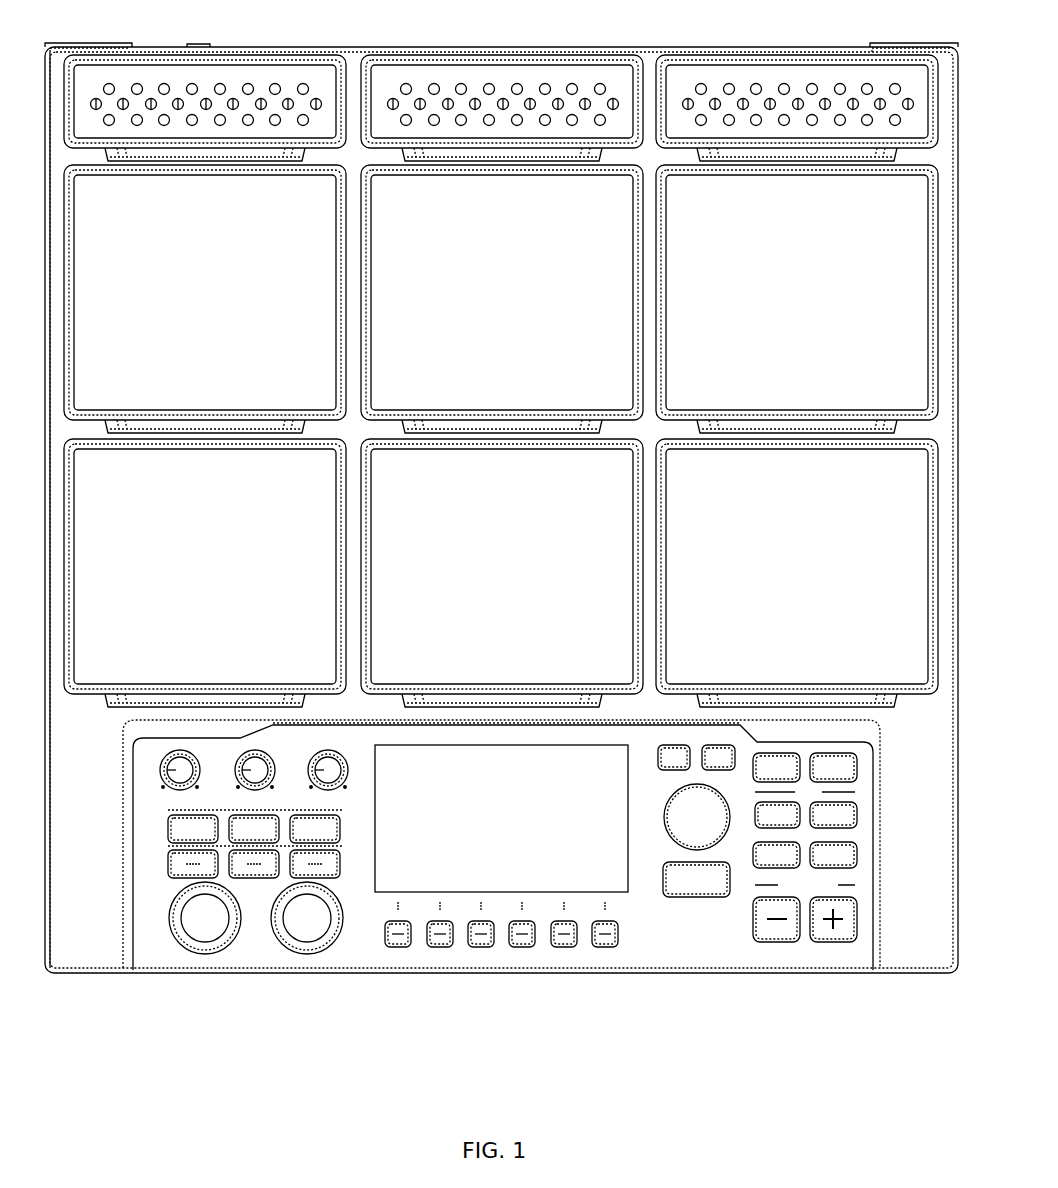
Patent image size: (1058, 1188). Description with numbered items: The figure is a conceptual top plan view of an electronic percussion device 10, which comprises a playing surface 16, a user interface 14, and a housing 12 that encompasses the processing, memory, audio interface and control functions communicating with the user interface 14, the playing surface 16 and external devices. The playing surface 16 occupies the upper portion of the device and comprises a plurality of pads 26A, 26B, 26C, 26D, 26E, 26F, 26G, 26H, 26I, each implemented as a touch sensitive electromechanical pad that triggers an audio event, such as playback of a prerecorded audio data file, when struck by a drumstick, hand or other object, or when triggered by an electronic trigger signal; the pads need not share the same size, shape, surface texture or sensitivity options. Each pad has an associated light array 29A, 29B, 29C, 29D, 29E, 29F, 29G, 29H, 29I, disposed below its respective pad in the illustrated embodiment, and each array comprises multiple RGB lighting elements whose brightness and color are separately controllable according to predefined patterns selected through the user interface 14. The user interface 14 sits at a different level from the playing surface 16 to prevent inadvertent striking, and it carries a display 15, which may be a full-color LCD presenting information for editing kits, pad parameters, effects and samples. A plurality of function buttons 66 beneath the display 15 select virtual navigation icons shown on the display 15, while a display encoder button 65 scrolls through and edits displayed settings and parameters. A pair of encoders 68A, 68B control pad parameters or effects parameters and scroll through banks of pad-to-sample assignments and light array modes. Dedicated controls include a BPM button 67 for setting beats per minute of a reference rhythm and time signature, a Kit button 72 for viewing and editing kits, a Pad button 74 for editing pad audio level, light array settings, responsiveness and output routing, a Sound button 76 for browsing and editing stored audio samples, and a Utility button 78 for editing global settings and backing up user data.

The electronic percussion device 10 is at (190, 1050).
The housing 12 is at (958, 52).
The user interface 14 is at (158, 932).
The display 15 is at (490, 828).
The playing surface 16 is at (68, 825).
The pad 26A is at (240, 70).
The pad 26B is at (537, 70).
The pad 26C is at (807, 70).
The pad 26D is at (188, 299).
The pad 26E is at (485, 299).
The pad 26F is at (781, 299).
The pad 26G is at (188, 576).
The pad 26H is at (485, 576).
The pad 26I is at (784, 576).
The light array 29A is at (242, 152).
The light array 29B is at (540, 152).
The light array 29C is at (840, 152).
The light array 29D is at (242, 423).
The light array 29E is at (540, 423).
The light array 29F is at (840, 423).
The light array 29G is at (240, 700).
The light array 29H is at (538, 700).
The light array 29I is at (838, 700).
The display encoder button 65 is at (676, 818).
The function buttons 66 is at (630, 978).
The BPM button 67 is at (658, 758).
The encoder 68A is at (200, 925).
The encoder 68B is at (302, 925).
The Kit button 72 is at (800, 828).
The Pad button 74 is at (858, 815).
The Sound button 76 is at (800, 867).
The Utility button 78 is at (858, 856).